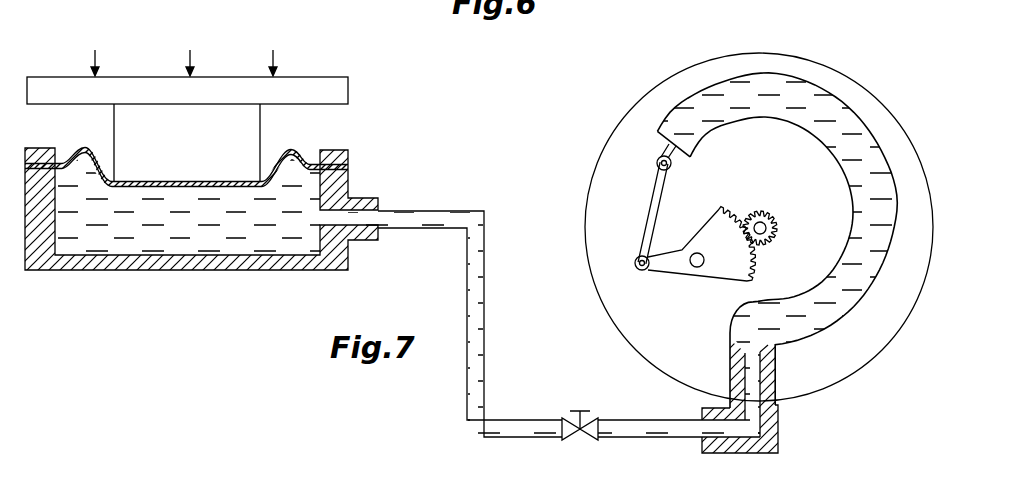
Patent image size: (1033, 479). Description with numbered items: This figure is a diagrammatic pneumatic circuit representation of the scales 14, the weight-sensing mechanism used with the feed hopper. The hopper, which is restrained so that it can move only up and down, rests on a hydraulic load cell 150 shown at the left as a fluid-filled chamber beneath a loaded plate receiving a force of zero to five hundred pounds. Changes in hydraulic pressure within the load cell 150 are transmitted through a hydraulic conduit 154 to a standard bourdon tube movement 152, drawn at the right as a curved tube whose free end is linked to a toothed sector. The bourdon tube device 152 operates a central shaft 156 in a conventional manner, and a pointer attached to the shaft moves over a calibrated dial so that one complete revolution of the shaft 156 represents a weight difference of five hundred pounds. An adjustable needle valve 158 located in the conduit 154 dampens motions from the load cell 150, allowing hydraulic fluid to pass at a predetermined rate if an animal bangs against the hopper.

The scales 14 is at (370, 118).
The hydraulic load cell 150 is at (341, 203).
The bourdon tube movement 152 is at (628, 112).
The hydraulic conduit 154 is at (484, 211).
The central shaft 156 is at (766, 218).
The adjustable needle valve 158 is at (585, 410).